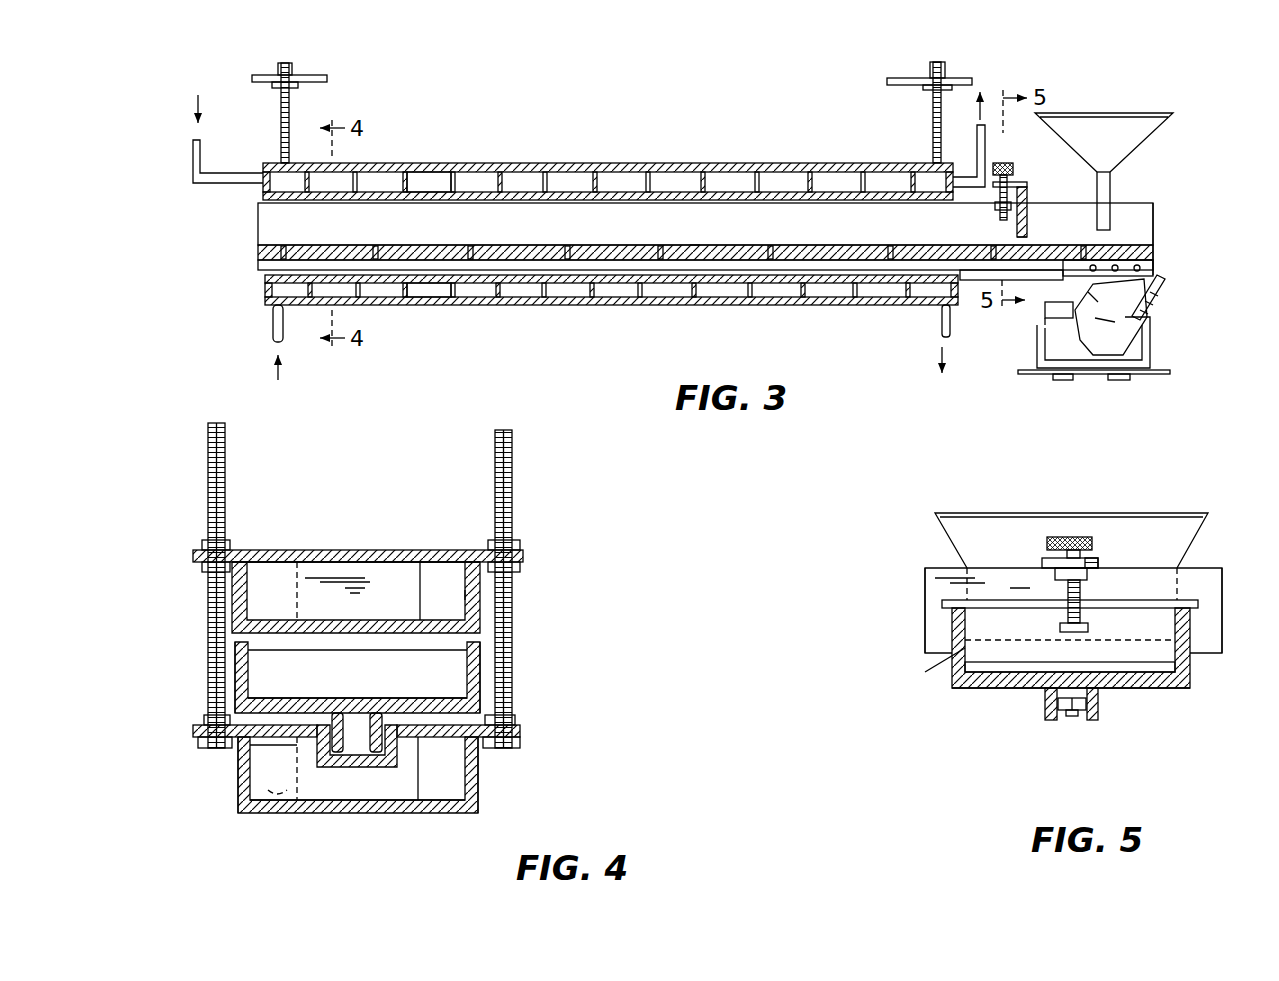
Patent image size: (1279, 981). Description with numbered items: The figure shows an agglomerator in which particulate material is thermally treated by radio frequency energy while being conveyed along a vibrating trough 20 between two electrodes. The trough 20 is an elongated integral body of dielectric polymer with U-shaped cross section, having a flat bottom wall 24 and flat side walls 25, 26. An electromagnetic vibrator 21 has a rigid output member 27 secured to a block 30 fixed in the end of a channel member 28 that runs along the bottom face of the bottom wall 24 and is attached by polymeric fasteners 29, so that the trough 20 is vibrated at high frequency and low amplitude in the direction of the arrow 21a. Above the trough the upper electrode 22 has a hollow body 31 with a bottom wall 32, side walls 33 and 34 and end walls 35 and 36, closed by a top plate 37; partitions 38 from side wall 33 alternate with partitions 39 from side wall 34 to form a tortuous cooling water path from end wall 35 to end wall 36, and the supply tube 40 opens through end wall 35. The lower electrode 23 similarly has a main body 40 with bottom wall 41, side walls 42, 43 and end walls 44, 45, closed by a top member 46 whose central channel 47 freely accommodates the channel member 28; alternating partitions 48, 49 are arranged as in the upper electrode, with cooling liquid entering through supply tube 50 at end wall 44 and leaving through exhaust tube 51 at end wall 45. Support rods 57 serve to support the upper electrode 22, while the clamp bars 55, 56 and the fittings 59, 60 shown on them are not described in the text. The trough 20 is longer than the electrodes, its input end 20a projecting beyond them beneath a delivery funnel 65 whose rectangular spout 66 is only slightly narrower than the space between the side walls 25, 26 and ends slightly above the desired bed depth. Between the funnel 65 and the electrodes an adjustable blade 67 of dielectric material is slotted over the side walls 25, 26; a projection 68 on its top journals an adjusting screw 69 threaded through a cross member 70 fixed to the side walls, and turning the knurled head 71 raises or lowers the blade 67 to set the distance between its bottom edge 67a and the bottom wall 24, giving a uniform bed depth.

In FIG. 3, the trough 20 is at (713, 256).
In FIG. 4, the trough 20 is at (313, 720).
In FIG. 5, the trough 20 is at (1068, 649).
In FIG. 3, the input end of trough 20a is at (1153, 245).
In FIG. 3, the electromagnetic vibrator 21 is at (1043, 300).
In FIG. 3, the arrow 21a is at (1111, 317).
In FIG. 3, the upper electrode 22 is at (580, 178).
In FIG. 4, the upper electrode 22 is at (356, 582).
In FIG. 3, the lower electrode 23 is at (962, 300).
In FIG. 4, the lower electrode 23 is at (355, 791).
In FIG. 3, the bottom wall 24 is at (420, 245).
In FIG. 4, the bottom wall 24 is at (288, 698).
In FIG. 5, the bottom wall 24 is at (1160, 688).
In FIG. 4, the side wall 25 is at (248, 672).
In FIG. 5, the side wall 25 is at (950, 630).
In FIG. 4, the side wall 26 is at (467, 672).
In FIG. 5, the side wall 26 is at (1192, 630).
In FIG. 3, the vibratory output member 27 is at (1165, 283).
In FIG. 3, the channel member 28 is at (258, 265).
In FIG. 4, the channel member 28 is at (368, 752).
In FIG. 5, the channel member 28 is at (1045, 705).
In FIG. 3, the fasteners 29 is at (700, 243).
In FIG. 3, the block 30 is at (1153, 270).
In FIG. 5, the block 30 is at (1075, 716).
In FIG. 4, the body 31 is at (400, 640).
In FIG. 3, the bottom wall 32 is at (555, 200).
In FIG. 4, the bottom wall 32 is at (365, 635).
In FIG. 4, the side wall 33 is at (250, 590).
In FIG. 4, the side wall 34 is at (467, 600).
In FIG. 3, the end wall 35 is at (266, 195).
In FIG. 3, the end wall 36 is at (950, 198).
In FIG. 3, the top plate 37 is at (818, 165).
In FIG. 4, the top plate 37 is at (385, 550).
In FIG. 3, the partitions 38 is at (462, 172).
In FIG. 4, the partitions 38 is at (418, 605).
In FIG. 3, the partitions 39 is at (415, 180).
In FIG. 4, the partitions 39 is at (297, 615).
In FIG. 3, the main body 40 is at (570, 245).
In FIG. 4, the main body 40 is at (305, 813).
In FIG. 3, the bottom wall 41 is at (620, 305).
In FIG. 4, the bottom wall 41 is at (460, 813).
In FIG. 4, the side wall 42 is at (238, 795).
In FIG. 4, the side wall 43 is at (478, 792).
In FIG. 3, the end wall 44 is at (266, 285).
In FIG. 3, the end wall 45 is at (963, 300).
In FIG. 4, the top member 46 is at (290, 740).
In FIG. 3, the central channel 47 is at (560, 285).
In FIG. 4, the central channel 47 is at (342, 767).
In FIG. 3, the partitions 48 is at (358, 290).
In FIG. 4, the partitions 48 is at (418, 785).
In FIG. 3, the partitions 49 is at (405, 290).
In FIG. 4, the partitions 49 is at (283, 780).
In FIG. 3, the supply tube 50 is at (273, 317).
In FIG. 3, the exhaust tube 51 is at (942, 330).
In FIG. 4, the upper clamp bar 55 is at (193, 556).
In FIG. 4, the lower clamp bar 56 is at (193, 727).
In FIG. 4, the support rods 57 is at (226, 470).
In FIG. 3, the adjusting plate 59 is at (312, 76).
In FIG. 3, the adjusting screw 60 is at (280, 76).
In FIG. 3, the delivery funnel 65 is at (1110, 113).
In FIG. 5, the delivery funnel 65 is at (1140, 513).
In FIG. 3, the spout 66 is at (1110, 190).
In FIG. 5, the spout 66 is at (930, 667).
In FIG. 3, the adjustable blade 67 is at (1027, 196).
In FIG. 5, the adjustable blade 67 is at (1099, 624).
In FIG. 3, the bottom edge 67a is at (1025, 237).
In FIG. 5, the bottom edge 67a is at (1120, 672).
In FIG. 3, the projection 68 is at (1025, 182).
In FIG. 5, the projection 68 is at (1100, 562).
In FIG. 3, the adjusting screw 69 is at (1000, 205).
In FIG. 5, the adjusting screw 69 is at (1080, 588).
In FIG. 3, the cross member 70 is at (1003, 212).
In FIG. 5, the cross member 70 is at (1110, 612).
In FIG. 3, the knurled head 71 is at (1000, 163).
In FIG. 5, the knurled head 71 is at (1047, 545).